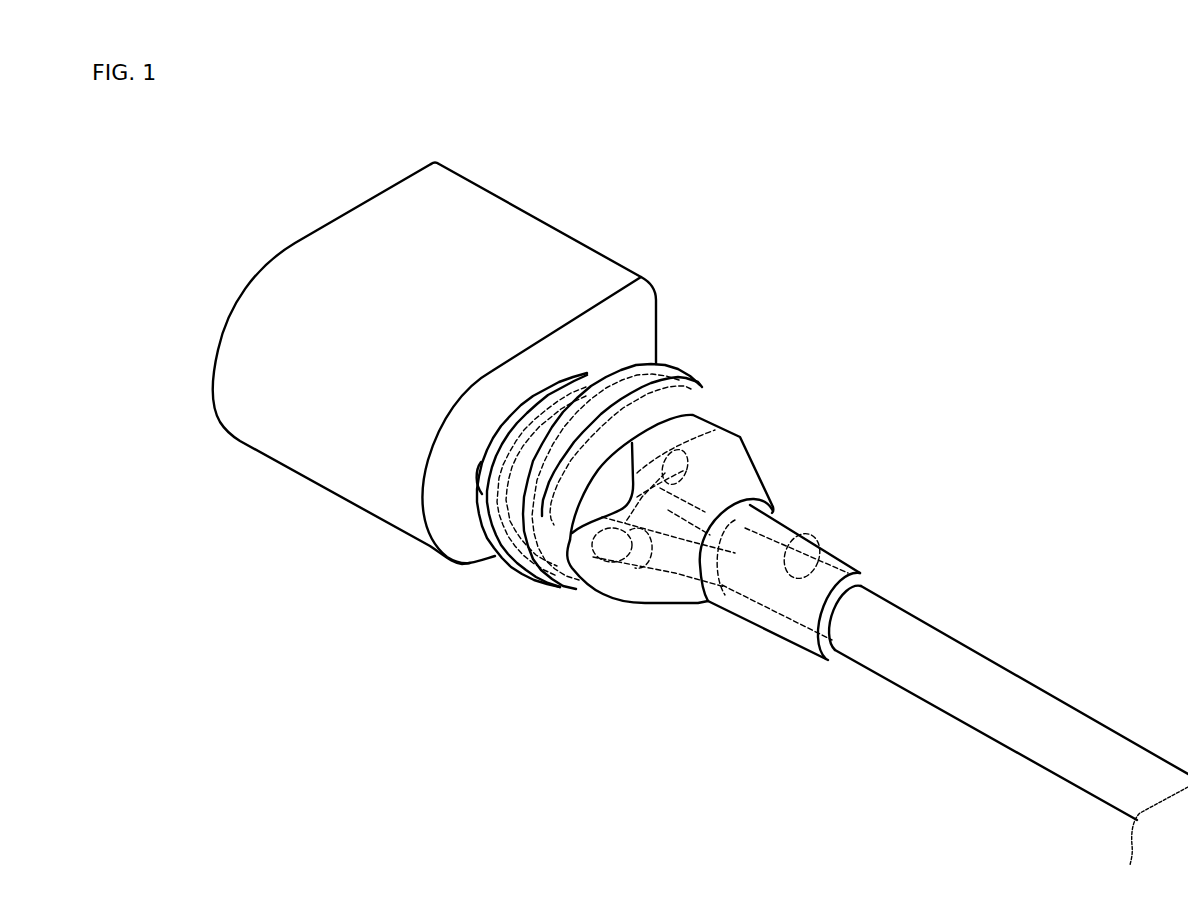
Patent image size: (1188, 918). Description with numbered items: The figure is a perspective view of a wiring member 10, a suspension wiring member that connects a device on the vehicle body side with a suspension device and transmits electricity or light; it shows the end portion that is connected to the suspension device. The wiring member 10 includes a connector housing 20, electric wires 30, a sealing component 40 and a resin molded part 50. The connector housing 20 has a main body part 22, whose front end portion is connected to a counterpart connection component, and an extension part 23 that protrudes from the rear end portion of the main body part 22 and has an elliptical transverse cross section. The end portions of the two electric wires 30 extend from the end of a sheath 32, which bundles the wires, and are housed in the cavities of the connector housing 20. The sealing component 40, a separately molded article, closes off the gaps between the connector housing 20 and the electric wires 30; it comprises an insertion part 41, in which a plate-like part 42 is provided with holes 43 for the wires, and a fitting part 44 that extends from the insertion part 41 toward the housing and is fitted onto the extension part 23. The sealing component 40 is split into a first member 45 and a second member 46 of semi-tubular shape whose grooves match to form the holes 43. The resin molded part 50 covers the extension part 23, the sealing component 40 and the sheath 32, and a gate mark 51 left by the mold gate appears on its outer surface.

The wiring member 10 is at (837, 285).
The connector housing 20 is at (572, 223).
The main body part 22 is at (598, 272).
The extension part 23 is at (480, 473).
The electric wires 30 is at (692, 576).
The sheath 32 is at (945, 693).
The sealing component 40 is at (747, 392).
The insertion part 41 is at (665, 681).
The plate-like part 42 is at (604, 559).
The holes 43 is at (643, 549).
The fitting part 44 is at (555, 586).
The first member 45 is at (745, 439).
The second member 46 is at (762, 472).
The resin molded part 50 is at (762, 480).
The gate mark 51 is at (823, 547).